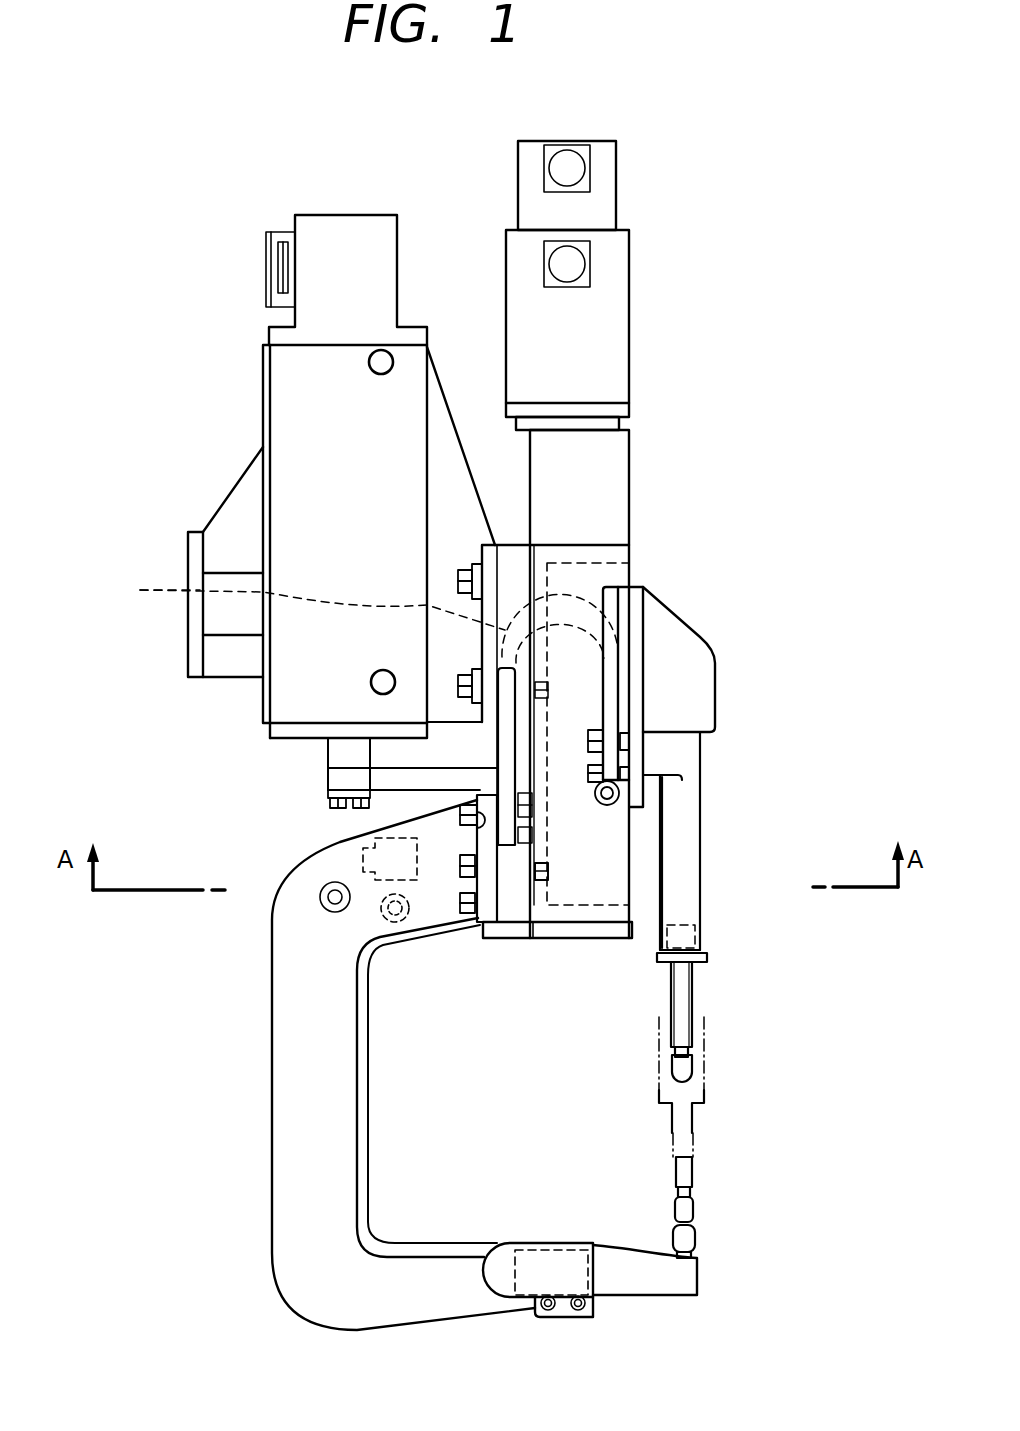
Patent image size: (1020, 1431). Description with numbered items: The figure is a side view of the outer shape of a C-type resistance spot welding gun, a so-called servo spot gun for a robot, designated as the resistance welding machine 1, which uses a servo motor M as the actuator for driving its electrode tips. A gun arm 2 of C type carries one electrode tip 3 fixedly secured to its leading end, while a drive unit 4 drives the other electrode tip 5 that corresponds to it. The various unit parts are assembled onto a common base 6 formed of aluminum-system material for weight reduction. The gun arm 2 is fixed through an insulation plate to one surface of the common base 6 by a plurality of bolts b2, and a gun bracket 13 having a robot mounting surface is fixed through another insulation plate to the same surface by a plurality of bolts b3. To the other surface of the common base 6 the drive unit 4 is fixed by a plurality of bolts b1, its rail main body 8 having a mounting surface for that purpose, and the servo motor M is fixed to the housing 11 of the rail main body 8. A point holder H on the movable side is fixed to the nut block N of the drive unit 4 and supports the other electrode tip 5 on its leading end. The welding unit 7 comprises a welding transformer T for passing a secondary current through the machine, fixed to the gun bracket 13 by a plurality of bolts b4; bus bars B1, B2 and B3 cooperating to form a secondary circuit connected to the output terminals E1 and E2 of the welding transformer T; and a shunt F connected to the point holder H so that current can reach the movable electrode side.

The resistance welding machine 1 is at (220, 240).
The gun arm 2 is at (285, 1028).
The electrode tip 3 is at (692, 1242).
The drive unit 4 is at (612, 480).
The electrode tip 5 is at (682, 1065).
The common base 6 is at (516, 908).
The welding unit 7 is at (113, 571).
The rail main body 8 is at (623, 875).
The housing 11 is at (610, 530).
The gun bracket 13 is at (313, 415).
The bolts b1 is at (553, 930).
The bolts b2 is at (460, 867).
The bolts b3 is at (466, 568).
The bolts b4 is at (395, 362).
The servo motor M is at (620, 340).
The nut block N is at (637, 632).
The point holder H is at (687, 843).
The bus bar B3 is at (620, 750).
The shunt F is at (158, 596).
The welding transformer T is at (342, 730).
The output terminal E1 is at (338, 753).
The output terminal E2 is at (349, 753).
The bus bar B1 is at (392, 780).
The bus bar B2 is at (349, 779).